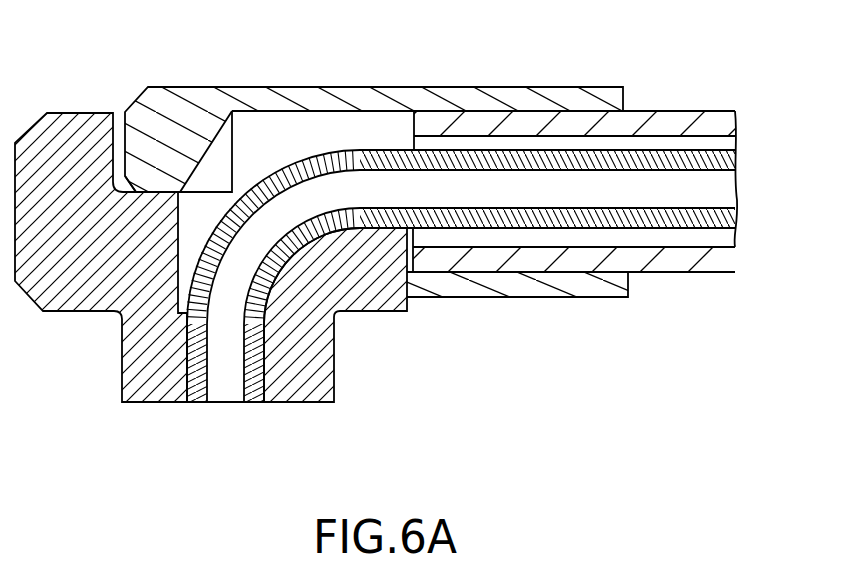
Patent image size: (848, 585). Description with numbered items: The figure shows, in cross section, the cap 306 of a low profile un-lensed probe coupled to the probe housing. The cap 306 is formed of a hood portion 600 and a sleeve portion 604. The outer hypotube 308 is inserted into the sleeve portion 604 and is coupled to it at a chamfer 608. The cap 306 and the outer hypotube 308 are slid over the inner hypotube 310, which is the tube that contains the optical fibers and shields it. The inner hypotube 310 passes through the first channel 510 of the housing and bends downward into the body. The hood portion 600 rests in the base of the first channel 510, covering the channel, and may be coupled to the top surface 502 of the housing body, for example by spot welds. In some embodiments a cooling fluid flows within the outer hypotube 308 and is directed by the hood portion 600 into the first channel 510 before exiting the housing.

The top surface 502 is at (78, 111).
The hood portion 600 is at (173, 87).
The cap 306 is at (490, 87).
The outer hypotube 308 is at (697, 112).
The inner hypotube 310 is at (736, 154).
The first channel 510 is at (136, 193).
The sleeve portion 604 is at (523, 298).
The chamfer 608 is at (620, 273).